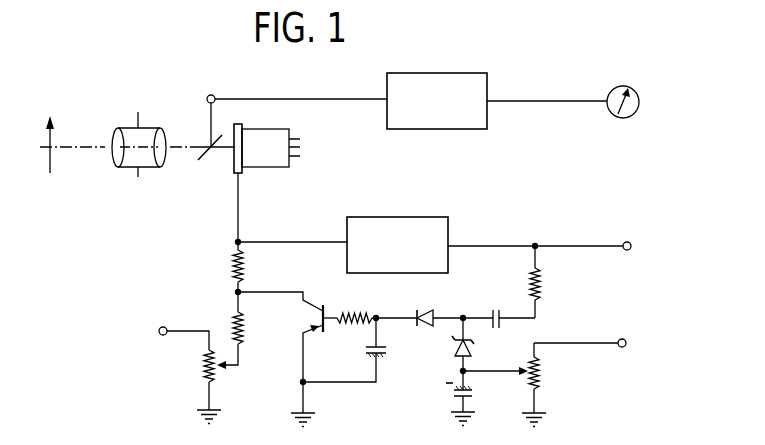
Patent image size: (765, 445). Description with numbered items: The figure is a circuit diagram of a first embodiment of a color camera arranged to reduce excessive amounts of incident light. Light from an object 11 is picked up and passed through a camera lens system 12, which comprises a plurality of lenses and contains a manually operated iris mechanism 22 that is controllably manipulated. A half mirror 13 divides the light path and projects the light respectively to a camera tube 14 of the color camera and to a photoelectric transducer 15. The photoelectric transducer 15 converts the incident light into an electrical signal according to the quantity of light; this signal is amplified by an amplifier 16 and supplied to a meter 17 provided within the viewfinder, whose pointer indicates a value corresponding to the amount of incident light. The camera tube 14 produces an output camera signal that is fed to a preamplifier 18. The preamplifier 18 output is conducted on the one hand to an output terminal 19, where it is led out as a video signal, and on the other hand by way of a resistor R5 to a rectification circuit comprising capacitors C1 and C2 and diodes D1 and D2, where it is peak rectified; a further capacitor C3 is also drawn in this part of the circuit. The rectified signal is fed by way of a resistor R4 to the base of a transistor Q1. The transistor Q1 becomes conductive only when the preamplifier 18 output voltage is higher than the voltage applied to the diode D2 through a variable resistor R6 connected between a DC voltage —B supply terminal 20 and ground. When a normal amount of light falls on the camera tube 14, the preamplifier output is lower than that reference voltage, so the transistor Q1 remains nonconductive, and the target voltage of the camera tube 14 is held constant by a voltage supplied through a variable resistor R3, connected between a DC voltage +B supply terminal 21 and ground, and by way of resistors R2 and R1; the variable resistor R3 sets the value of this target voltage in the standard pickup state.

The object 11 is at (53, 123).
The camera lens system 12 is at (153, 127).
The half mirror 13 is at (207, 161).
The camera tube 14 is at (266, 168).
The photoelectric transducer 15 is at (211, 95).
The amplifier 16 is at (430, 73).
The meter 17 is at (622, 86).
The preamplifier 18 is at (400, 217).
The output terminal 19 is at (627, 242).
The DC voltage —B supply terminal 20 is at (622, 339).
The DC voltage +B supply terminal 21 is at (165, 327).
The manually operated iris mechanism 22 is at (139, 177).
The resistor R1 is at (251, 281).
The resistor R2 is at (243, 340).
The variable resistor R3 is at (198, 387).
The resistor R4 is at (377, 306).
The resistor R5 is at (547, 278).
The variable resistor R6 is at (543, 385).
The capacitor C1 is at (358, 350).
The capacitor C2 is at (512, 307).
The capacitor C3 is at (472, 404).
The diode D1 is at (455, 309).
The diode D2 is at (490, 354).
The transistor Q1 is at (287, 359).